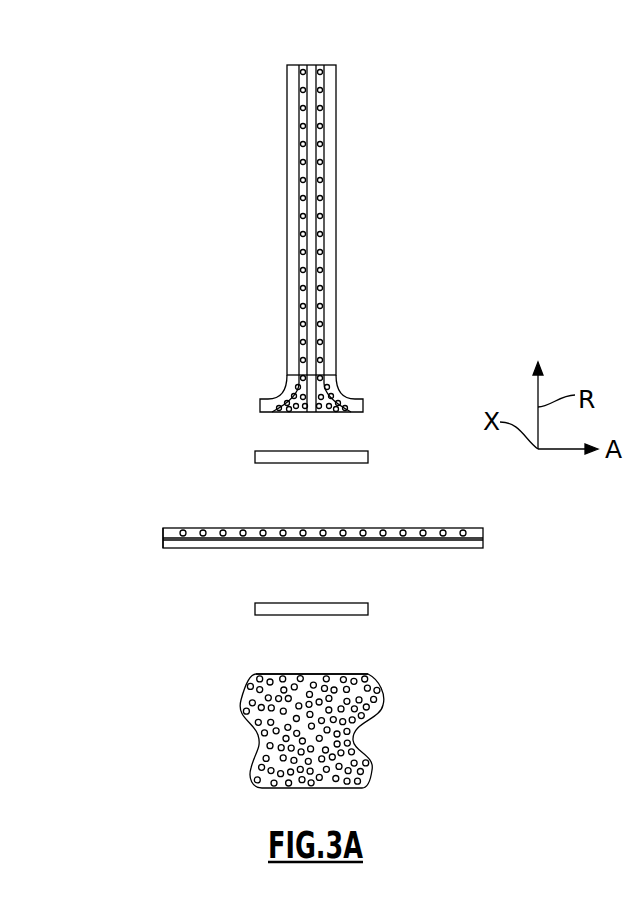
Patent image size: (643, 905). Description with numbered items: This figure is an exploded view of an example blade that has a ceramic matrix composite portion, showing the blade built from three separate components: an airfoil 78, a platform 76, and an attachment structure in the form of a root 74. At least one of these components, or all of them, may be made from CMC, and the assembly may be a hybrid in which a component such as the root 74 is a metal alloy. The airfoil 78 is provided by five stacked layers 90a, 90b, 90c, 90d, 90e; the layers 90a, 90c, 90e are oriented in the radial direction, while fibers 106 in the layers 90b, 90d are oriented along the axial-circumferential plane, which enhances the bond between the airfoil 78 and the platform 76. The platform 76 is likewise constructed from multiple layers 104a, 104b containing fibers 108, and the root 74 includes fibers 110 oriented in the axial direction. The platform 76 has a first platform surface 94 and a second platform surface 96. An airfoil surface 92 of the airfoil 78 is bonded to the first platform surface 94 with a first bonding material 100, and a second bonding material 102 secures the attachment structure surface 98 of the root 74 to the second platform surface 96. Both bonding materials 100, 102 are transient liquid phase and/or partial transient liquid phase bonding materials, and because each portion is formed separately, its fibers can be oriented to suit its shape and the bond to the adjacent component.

The root 74 is at (400, 695).
The platform 76 is at (495, 527).
The airfoil 78 is at (345, 250).
The layer 90a is at (291, 80).
The layer 90b is at (303, 68).
The layer 90c is at (311, 68).
The layer 90d is at (320, 68).
The layer 90e is at (332, 80).
The airfoil surface 92 is at (340, 412).
The first platform surface 94 is at (413, 528).
The second platform surface 96 is at (453, 550).
The attachment structure surface 98 is at (353, 674).
The first bonding material 100 is at (368, 458).
The second bonding material 102 is at (368, 609).
The layer 104a is at (163, 532).
The layer 104b is at (163, 543).
The fibers 106 is at (297, 400).
The fibers 108 is at (263, 527).
The fibers 110 is at (270, 750).